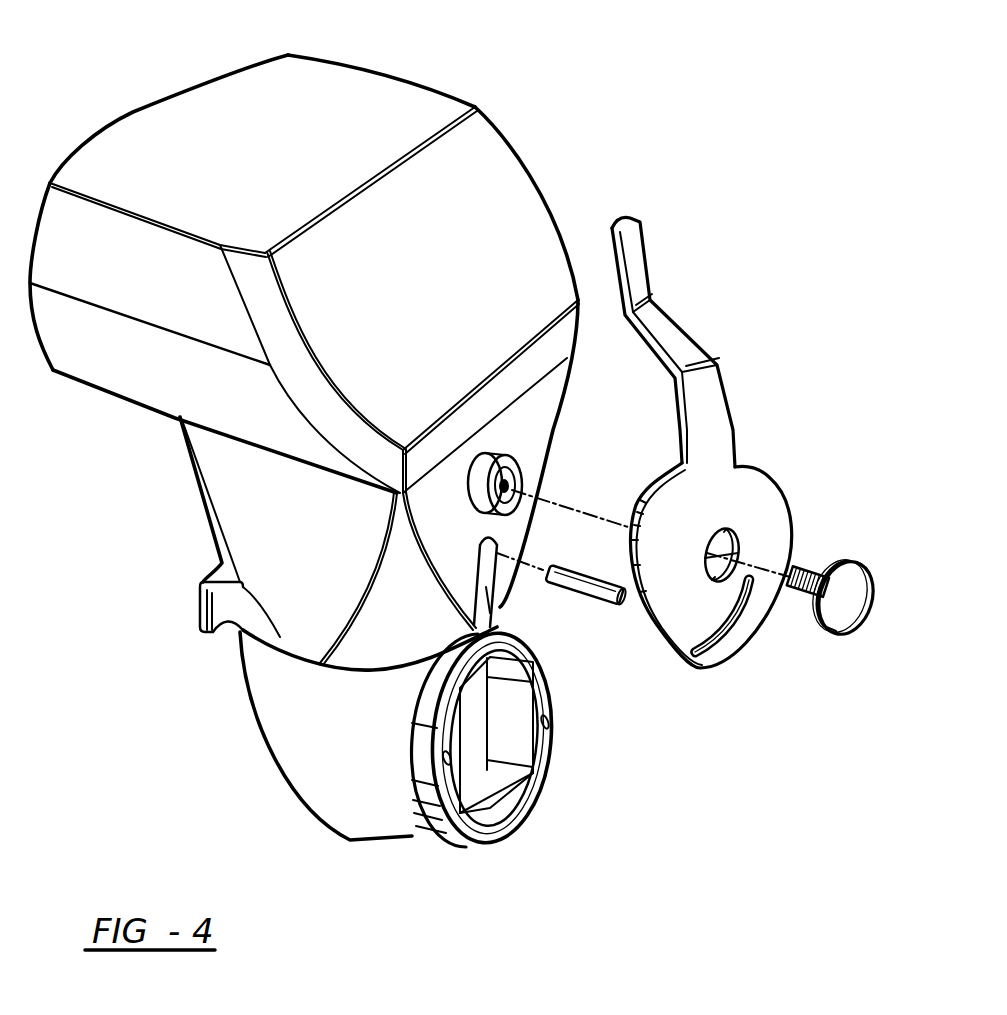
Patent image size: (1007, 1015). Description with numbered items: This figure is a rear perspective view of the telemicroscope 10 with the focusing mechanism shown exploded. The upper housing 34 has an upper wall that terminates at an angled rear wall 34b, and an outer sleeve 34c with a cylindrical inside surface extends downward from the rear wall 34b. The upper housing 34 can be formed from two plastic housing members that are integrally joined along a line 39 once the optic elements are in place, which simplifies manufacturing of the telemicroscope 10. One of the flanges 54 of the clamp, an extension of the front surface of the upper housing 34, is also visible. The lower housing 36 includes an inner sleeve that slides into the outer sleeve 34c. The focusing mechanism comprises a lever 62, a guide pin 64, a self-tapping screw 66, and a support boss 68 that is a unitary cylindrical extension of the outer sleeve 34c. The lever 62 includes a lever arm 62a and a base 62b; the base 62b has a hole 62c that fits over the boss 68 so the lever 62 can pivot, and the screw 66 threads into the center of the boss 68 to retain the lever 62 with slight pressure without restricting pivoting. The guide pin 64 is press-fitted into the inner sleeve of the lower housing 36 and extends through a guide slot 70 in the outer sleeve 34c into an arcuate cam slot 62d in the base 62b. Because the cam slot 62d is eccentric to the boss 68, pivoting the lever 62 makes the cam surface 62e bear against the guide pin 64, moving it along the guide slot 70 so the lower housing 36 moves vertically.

The telemicroscope 10 is at (640, 125).
The upper housing 34 is at (148, 408).
The angled rear wall 34b is at (442, 276).
The outer sleeve 34c is at (222, 482).
The line 39 is at (117, 312).
The flanges 54 is at (197, 622).
The lower housing 36 is at (440, 860).
The guide slot 70 is at (497, 605).
The guide pin 64 is at (603, 605).
The support boss 68 is at (512, 474).
The lever 62 is at (741, 450).
The lever arm 62a is at (628, 235).
The base 62b is at (753, 492).
The hole 62c is at (740, 547).
The cam slot 62d is at (748, 635).
The cam surface 62e is at (697, 662).
The self-tapping screw 66 is at (847, 635).